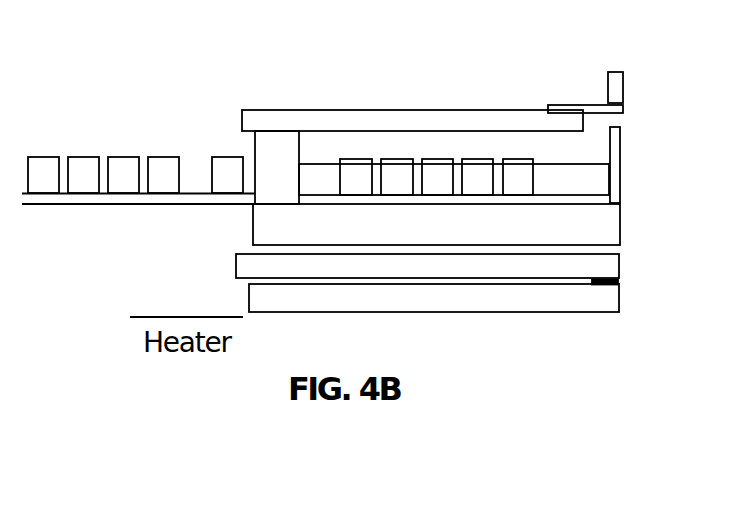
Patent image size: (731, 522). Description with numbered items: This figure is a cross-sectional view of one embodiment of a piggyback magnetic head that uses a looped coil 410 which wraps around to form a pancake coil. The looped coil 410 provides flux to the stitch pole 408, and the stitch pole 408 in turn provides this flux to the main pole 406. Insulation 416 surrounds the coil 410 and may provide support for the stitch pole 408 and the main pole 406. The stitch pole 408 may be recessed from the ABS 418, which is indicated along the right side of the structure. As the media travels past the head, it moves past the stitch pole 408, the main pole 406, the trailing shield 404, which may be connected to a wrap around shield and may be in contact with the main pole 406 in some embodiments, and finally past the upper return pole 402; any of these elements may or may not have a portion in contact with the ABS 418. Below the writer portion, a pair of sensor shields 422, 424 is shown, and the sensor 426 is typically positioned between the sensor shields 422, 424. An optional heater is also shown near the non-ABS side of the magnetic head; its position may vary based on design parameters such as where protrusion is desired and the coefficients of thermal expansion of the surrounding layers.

The upper return pole 402 is at (624, 87).
The trailing shield 404 is at (621, 173).
The main pole 406 is at (584, 104).
The stitch pole 408 is at (440, 109).
The looped coil 410 is at (513, 158).
The insulation 416 is at (492, 236).
The ABS 418 is at (622, 227).
The sensor shield 422 is at (236, 265).
The sensor shield 424 is at (249, 292).
The sensor 426 is at (612, 280).